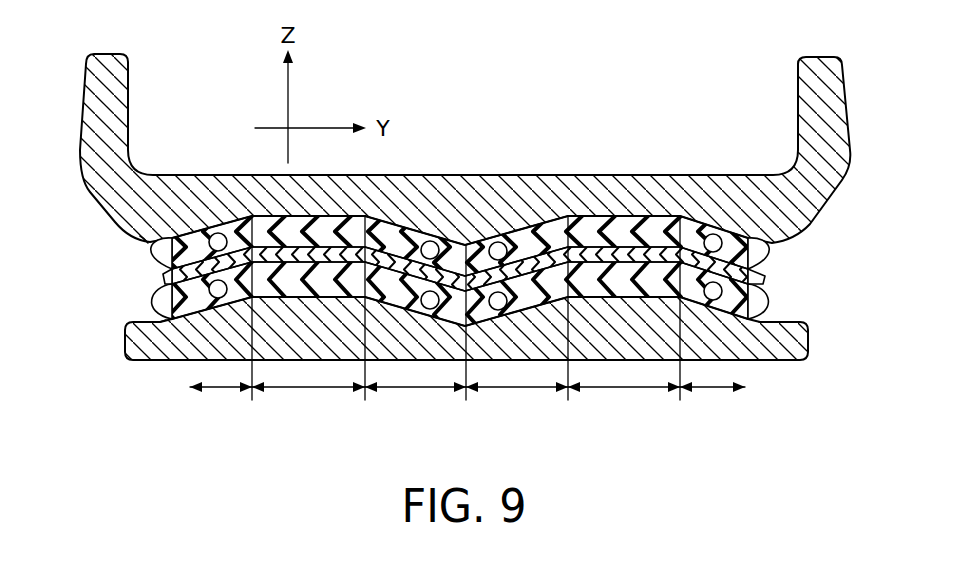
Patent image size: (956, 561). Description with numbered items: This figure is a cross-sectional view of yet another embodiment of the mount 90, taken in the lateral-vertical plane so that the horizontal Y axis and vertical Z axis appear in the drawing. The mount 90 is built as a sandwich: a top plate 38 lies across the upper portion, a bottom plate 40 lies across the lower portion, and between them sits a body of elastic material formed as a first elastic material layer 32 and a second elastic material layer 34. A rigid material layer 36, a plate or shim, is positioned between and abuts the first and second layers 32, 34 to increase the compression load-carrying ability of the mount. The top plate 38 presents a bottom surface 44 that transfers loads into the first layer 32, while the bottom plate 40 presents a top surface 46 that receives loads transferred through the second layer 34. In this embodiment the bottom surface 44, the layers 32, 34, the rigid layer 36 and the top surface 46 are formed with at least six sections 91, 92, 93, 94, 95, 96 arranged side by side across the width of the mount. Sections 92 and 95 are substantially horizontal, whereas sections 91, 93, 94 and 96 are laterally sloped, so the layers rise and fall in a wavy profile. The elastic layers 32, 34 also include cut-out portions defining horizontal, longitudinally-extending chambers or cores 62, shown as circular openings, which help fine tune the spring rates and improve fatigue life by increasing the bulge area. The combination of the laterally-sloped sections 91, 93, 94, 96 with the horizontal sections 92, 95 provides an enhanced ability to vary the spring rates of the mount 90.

The first elastic material layer 32 is at (745, 260).
The second elastic material layer 34 is at (727, 305).
The rigid material layer 36 is at (168, 280).
The top plate 38 is at (715, 188).
The bottom plate 40 is at (780, 350).
The bottom surface 44 is at (134, 247).
The top surface 46 is at (150, 310).
The chamber or core 62 is at (432, 240).
The mount 90 is at (428, 128).
The laterally-sloped section 91 is at (226, 390).
The substantially horizontal section 92 is at (308, 390).
The laterally-sloped section 93 is at (417, 390).
The laterally-sloped section 94 is at (517, 390).
The substantially horizontal section 95 is at (620, 390).
The laterally-sloped section 96 is at (713, 390).